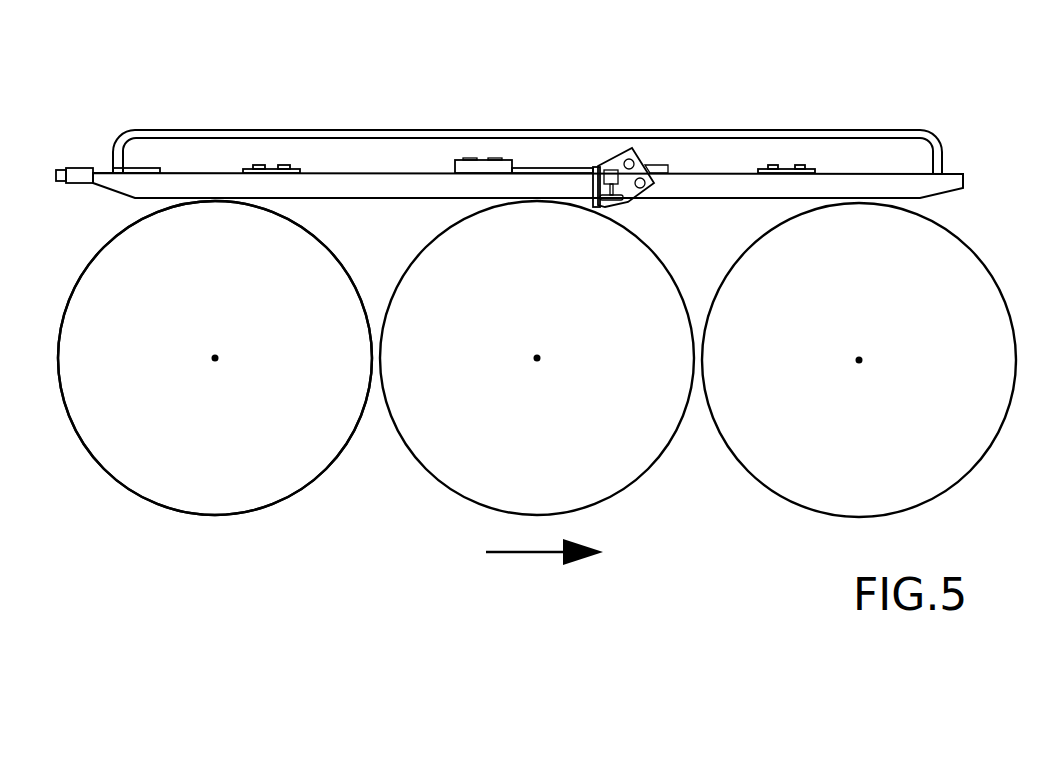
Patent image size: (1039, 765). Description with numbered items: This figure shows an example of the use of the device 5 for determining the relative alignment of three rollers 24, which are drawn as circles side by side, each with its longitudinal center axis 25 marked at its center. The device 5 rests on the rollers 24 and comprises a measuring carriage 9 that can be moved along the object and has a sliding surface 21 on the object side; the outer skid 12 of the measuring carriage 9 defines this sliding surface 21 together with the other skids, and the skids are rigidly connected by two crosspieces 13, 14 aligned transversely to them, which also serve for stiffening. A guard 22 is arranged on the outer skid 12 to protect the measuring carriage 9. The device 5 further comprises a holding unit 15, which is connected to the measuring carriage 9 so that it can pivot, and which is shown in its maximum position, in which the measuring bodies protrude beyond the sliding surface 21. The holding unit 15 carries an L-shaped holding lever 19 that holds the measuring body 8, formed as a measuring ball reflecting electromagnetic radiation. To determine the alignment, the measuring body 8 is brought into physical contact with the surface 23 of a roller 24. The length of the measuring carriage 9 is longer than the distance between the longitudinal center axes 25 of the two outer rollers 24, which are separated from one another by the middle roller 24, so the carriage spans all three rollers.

The device 5 is at (557, 92).
The measuring body 8 is at (610, 207).
The measuring carriage 9 is at (527, 100).
The skid 12 is at (712, 190).
The crosspiece 13 is at (275, 165).
The crosspiece 14 is at (787, 170).
The holding unit 15 is at (543, 163).
The holding lever 19 is at (573, 173).
The sliding surface 21 is at (383, 200).
The guard 22 is at (380, 129).
The surface 23 is at (177, 513).
The roller 24 is at (135, 463).
The longitudinal center axis 25 is at (215, 358).